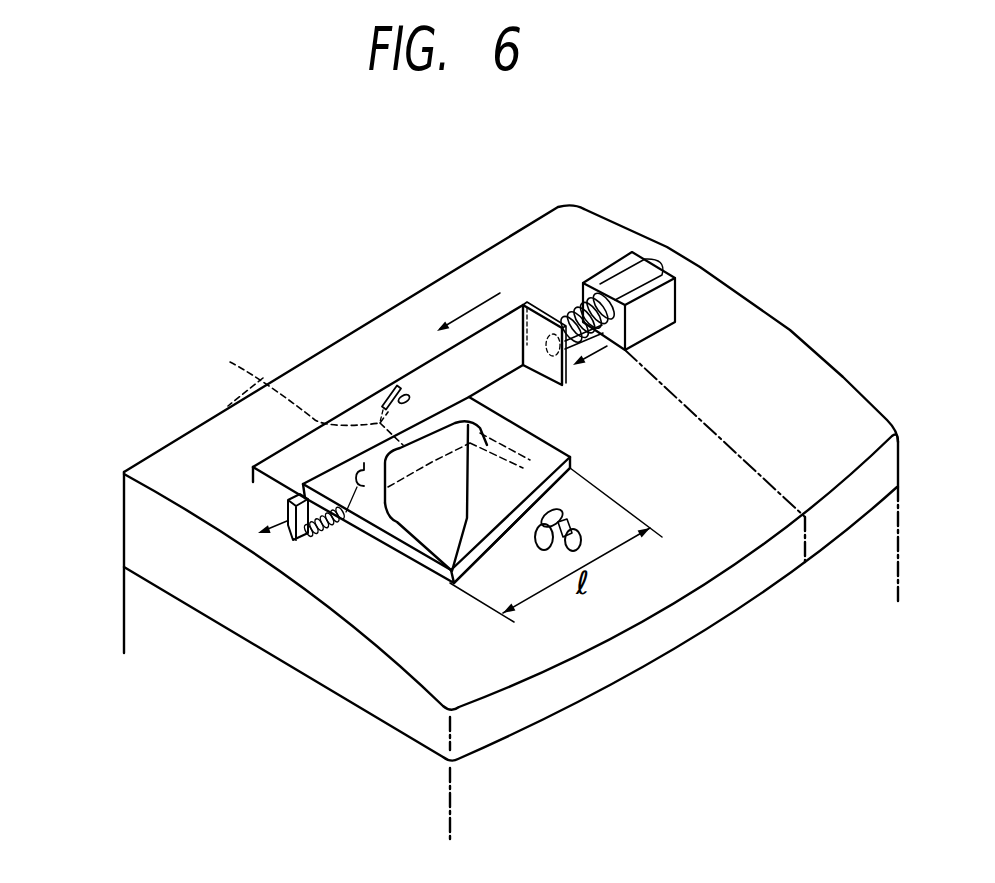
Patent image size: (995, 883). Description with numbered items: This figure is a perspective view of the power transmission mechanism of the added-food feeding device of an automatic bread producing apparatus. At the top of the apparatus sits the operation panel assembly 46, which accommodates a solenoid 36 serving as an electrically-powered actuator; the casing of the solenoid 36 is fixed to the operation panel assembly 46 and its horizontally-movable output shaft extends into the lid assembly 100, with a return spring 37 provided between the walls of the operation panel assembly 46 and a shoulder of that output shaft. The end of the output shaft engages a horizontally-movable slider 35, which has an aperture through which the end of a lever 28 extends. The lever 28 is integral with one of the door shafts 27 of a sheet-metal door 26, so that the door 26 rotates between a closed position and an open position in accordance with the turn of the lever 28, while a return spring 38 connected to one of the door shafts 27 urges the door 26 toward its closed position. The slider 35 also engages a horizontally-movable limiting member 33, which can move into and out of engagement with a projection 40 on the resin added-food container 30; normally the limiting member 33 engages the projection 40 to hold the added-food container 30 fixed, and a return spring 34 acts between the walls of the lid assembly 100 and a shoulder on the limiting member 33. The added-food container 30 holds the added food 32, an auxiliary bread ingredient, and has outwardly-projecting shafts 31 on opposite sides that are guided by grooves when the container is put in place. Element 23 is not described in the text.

The lid assembly 100 is at (112, 520).
The top panel 23 is at (288, 370).
The door 26 is at (440, 420).
The door shafts 27 is at (637, 478).
The lever 28 is at (384, 400).
The added-food container 30 is at (500, 550).
The shafts 31 is at (566, 510).
The added food 32 is at (437, 538).
The limiting member 33 is at (288, 523).
The return spring 34 is at (308, 531).
The slider 35 is at (282, 455).
The solenoid 36 is at (676, 282).
The return spring 37 is at (566, 310).
The return spring 38 is at (578, 518).
The projection 40 is at (346, 510).
The operation panel assembly 46 is at (843, 377).